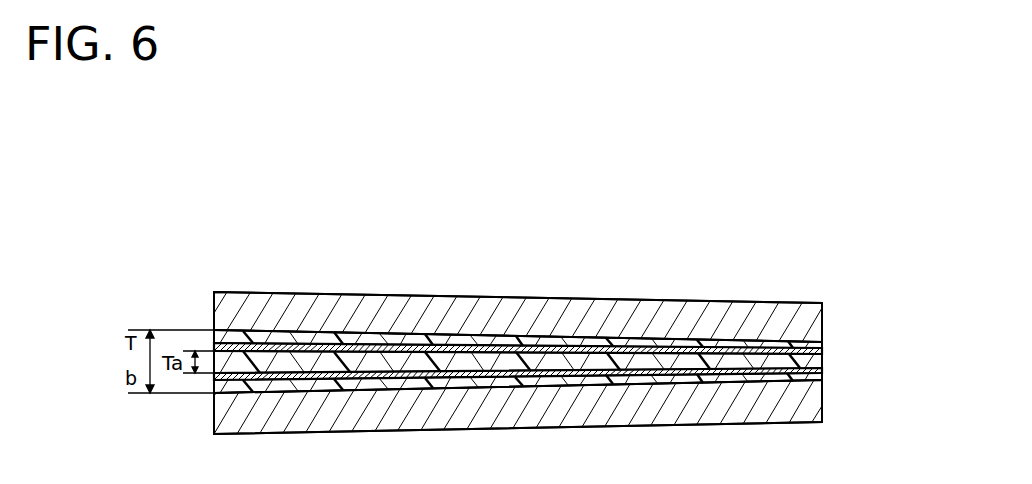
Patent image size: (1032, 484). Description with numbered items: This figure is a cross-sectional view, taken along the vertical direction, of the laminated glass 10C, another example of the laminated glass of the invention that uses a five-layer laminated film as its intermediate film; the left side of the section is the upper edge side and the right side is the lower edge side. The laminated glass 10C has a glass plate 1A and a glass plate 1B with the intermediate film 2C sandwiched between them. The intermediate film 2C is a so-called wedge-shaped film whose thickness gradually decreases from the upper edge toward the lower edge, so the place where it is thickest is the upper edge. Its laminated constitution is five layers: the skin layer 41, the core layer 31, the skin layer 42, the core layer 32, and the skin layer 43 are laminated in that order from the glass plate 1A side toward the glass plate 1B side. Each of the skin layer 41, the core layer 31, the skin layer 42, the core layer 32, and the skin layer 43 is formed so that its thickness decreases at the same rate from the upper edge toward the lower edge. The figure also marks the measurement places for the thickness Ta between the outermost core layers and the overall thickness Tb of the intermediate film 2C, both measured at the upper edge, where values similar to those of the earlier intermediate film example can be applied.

The laminated glass 10C is at (468, 268).
The glass plate 1A is at (808, 413).
The glass plate 1B is at (823, 316).
The intermediate film 2C is at (113, 330).
The core layer 31 is at (823, 369).
The core layer 32 is at (823, 352).
The skin layer 41 is at (823, 375).
The skin layer 42 is at (823, 358).
The skin layer 43 is at (823, 349).